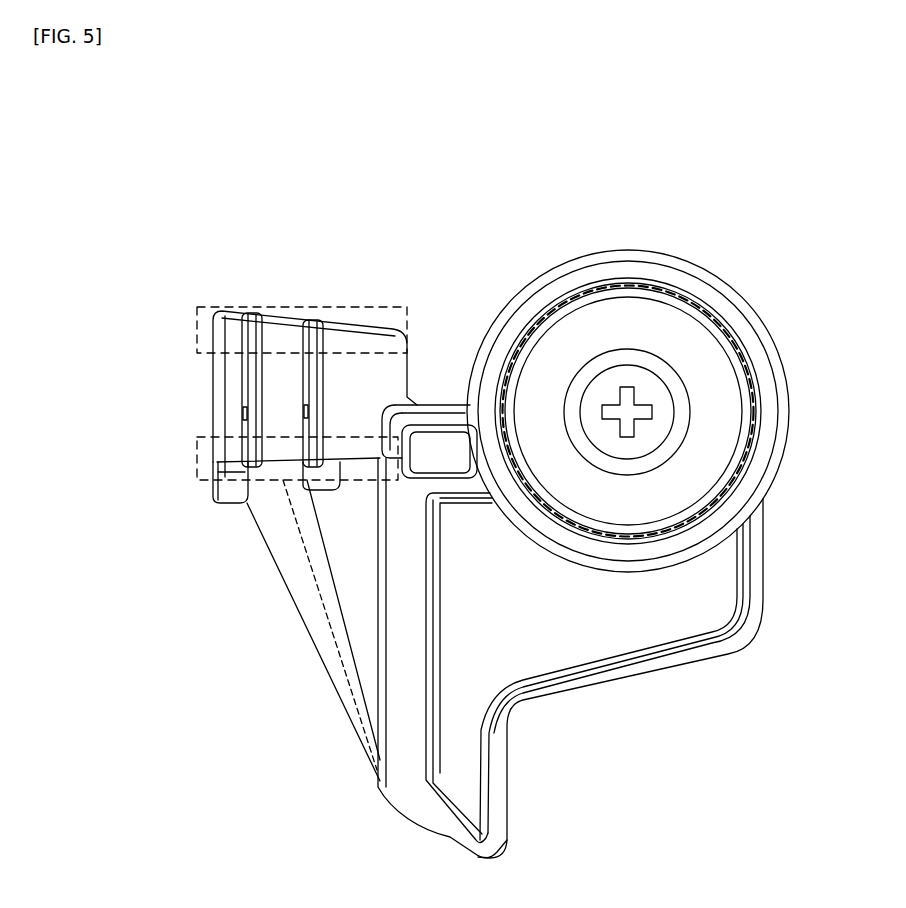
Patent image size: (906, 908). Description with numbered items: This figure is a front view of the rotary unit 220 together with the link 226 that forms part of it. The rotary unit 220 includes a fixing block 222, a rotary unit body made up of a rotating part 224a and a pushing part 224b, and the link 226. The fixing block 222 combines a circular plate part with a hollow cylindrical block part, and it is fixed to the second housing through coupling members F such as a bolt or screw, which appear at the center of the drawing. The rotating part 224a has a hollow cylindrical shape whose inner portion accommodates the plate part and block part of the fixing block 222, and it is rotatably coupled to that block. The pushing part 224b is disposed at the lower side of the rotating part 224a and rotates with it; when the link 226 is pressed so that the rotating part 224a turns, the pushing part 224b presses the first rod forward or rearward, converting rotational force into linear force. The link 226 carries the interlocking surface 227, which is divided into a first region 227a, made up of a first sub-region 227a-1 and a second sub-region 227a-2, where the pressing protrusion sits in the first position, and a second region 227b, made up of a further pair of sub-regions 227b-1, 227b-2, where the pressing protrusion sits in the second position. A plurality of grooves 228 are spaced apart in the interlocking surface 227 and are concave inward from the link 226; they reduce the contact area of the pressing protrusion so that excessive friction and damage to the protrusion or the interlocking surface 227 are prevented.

The rotary unit 220 is at (141, 109).
The fixing block 222 is at (575, 333).
The rotating part 224a is at (634, 265).
The pushing part 224b is at (460, 763).
The link 226 is at (297, 540).
The interlocking surface 227 is at (163, 323).
The first region 227a is at (265, 588).
The 1-1 region 227a-1 is at (342, 487).
The 1-2 region 227a-2 is at (242, 503).
The second region 227b is at (397, 222).
The 2-1 region 227b-1 is at (362, 303).
The 2-2 region 227b-2 is at (247, 303).
The grooves 228 is at (312, 387).
The coupling members F is at (650, 387).